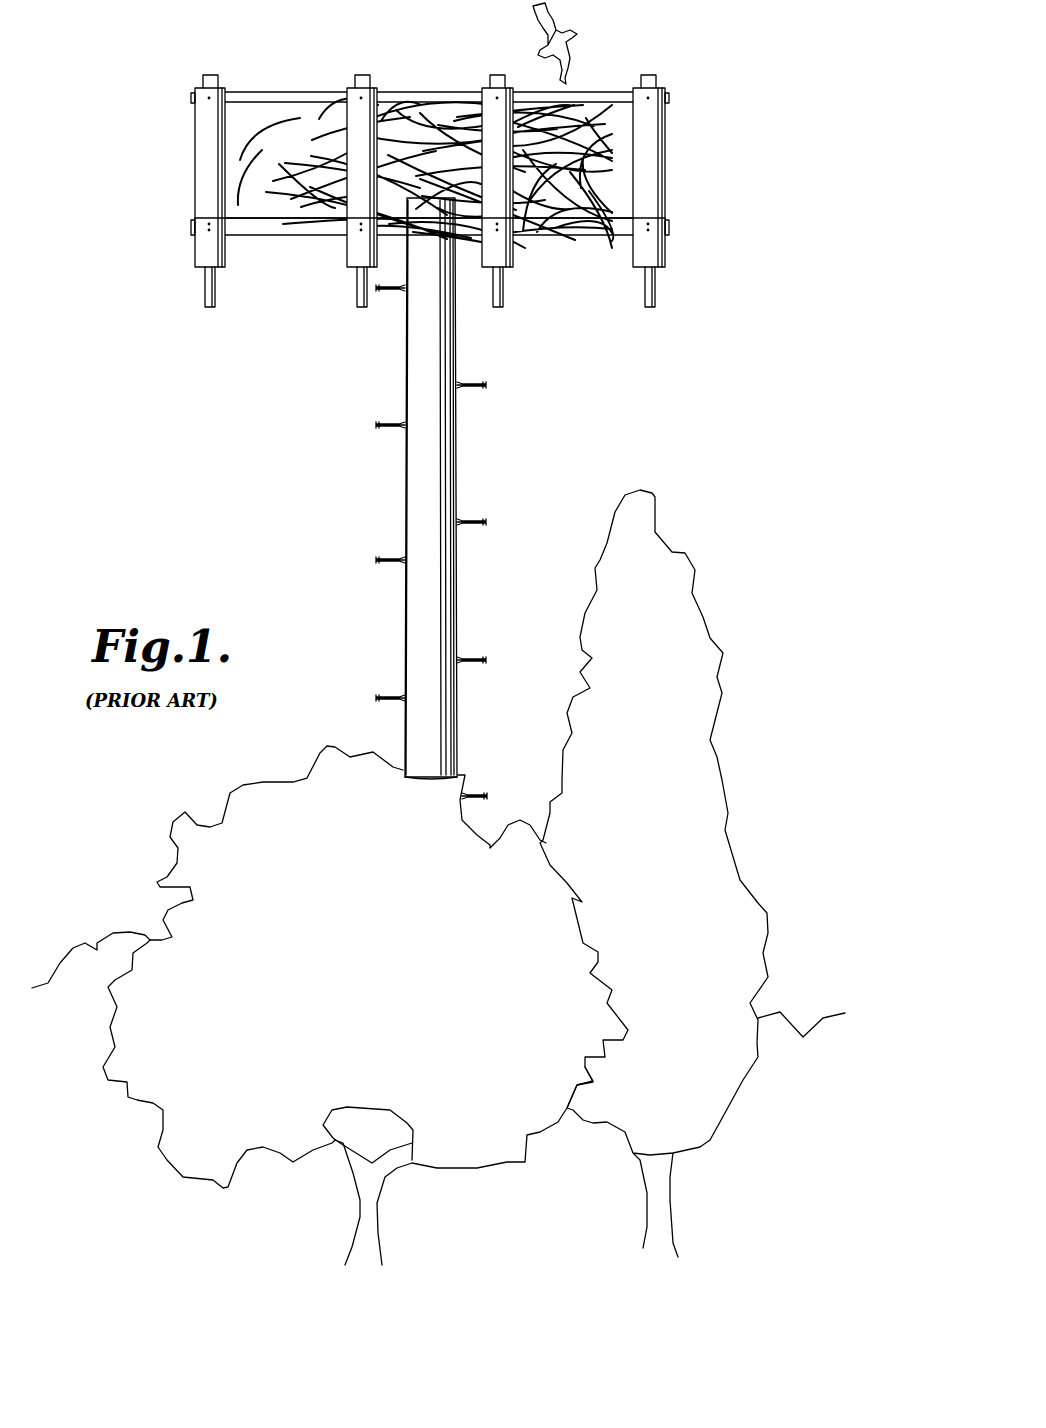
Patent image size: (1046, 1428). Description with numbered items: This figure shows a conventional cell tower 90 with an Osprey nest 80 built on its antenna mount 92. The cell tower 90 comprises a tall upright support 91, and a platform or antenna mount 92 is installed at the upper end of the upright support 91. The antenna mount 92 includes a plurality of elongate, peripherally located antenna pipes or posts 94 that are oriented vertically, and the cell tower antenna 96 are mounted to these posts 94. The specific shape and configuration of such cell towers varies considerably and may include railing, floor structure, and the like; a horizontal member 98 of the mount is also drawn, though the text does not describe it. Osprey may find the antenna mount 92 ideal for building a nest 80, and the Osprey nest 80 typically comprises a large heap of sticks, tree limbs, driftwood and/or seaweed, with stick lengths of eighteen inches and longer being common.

The Osprey nest 80 is at (290, 118).
The conventional cell tower 90 is at (565, 428).
The upright support 91 is at (457, 418).
The antenna mount 92 is at (595, 238).
The antenna pipes or posts 94 is at (204, 288).
The cell tower antenna 96 is at (200, 163).
The horizontal crossarm rail 98 is at (433, 94).